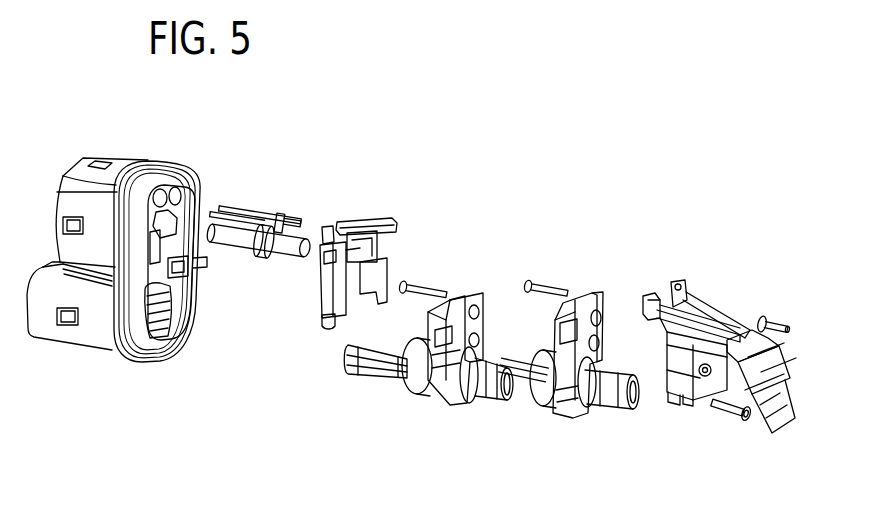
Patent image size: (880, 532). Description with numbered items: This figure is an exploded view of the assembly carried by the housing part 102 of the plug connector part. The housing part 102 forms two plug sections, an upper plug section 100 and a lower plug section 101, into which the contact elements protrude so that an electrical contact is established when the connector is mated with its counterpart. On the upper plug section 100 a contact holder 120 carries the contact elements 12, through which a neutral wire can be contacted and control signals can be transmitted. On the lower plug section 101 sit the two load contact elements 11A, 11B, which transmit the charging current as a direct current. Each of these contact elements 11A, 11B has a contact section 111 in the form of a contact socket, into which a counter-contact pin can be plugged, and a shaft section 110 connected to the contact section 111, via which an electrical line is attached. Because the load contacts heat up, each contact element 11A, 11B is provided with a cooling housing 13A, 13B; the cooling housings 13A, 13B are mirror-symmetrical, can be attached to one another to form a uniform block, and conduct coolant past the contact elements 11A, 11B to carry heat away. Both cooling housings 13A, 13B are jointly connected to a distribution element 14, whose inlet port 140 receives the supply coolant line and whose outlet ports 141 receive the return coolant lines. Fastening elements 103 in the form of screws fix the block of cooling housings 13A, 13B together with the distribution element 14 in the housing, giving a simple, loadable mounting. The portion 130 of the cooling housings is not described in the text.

The upper plug section 100 is at (83, 181).
The lower plug section 101 is at (47, 328).
The housing part 102 is at (137, 353).
The contact elements 12 is at (250, 225).
The contact holder 120 is at (386, 256).
The fastening elements 103 is at (428, 286).
The contact section 111 is at (356, 371).
The cylindrical housing portion 130 is at (417, 397).
The shaft section 110 is at (540, 412).
The contact element 11A is at (503, 397).
The contact element 11B is at (627, 407).
The cooling housing 13A is at (434, 404).
The cooling housing 13B is at (571, 422).
The distribution element 14 is at (743, 358).
The outlet ports 141 is at (748, 396).
The inlet port 140 is at (773, 413).